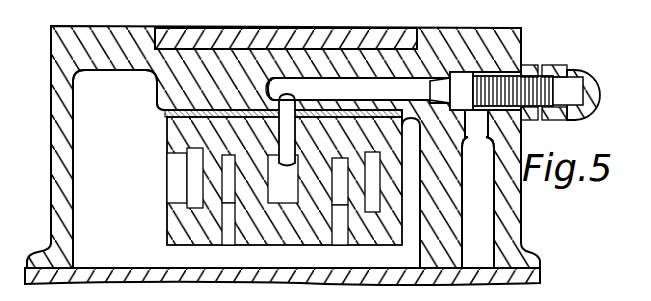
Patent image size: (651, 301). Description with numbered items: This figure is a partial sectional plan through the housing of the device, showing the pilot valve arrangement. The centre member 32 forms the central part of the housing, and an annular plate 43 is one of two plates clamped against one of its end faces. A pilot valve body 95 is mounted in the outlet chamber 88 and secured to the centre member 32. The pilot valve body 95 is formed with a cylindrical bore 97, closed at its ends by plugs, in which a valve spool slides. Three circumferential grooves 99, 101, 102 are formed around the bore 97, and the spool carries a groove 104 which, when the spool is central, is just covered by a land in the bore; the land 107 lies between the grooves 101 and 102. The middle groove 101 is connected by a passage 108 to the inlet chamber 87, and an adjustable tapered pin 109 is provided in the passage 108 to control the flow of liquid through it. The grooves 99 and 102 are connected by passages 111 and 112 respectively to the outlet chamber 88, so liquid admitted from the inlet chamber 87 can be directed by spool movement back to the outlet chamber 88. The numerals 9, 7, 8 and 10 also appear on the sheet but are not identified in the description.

The centre member 32 is at (56, 73).
The outlet chamber 88 is at (84, 110).
The pilot valve body 95 is at (180, 137).
The circumferential groove 99 is at (227, 193).
The passage 111 is at (227, 237).
The circumferential groove 101 is at (283, 205).
The circumferential groove 102 is at (337, 197).
The passage 112 is at (343, 237).
The passage 108 is at (388, 88).
The adjustable tapered pin 109 is at (438, 83).
The inlet chamber 87 is at (482, 222).
The annular plate 43 is at (102, 272).
The circumferential groove 104 is at (286, 24).
The element 9 is at (168, 24).
The cylindrical bore 97 is at (205, 24).
The element 7 is at (243, 24).
The element 8 is at (312, 24).
The land 107 is at (339, 24).
The element 10 is at (366, 24).